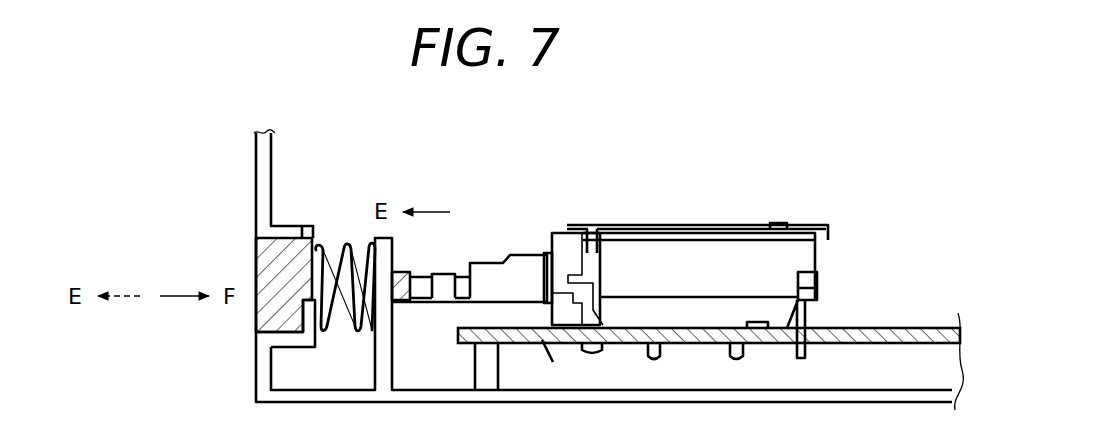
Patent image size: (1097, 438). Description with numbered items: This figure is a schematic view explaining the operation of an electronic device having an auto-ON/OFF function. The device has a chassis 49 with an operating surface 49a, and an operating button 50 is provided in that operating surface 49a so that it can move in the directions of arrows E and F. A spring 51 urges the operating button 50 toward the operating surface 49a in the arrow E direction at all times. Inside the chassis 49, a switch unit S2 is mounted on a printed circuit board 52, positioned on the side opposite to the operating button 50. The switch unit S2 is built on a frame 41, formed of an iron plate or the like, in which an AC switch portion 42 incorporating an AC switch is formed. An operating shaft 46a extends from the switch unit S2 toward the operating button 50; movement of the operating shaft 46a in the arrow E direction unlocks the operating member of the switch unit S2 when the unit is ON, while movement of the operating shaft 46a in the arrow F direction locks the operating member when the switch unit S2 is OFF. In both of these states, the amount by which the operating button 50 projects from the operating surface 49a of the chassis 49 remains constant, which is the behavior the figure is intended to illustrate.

The frame 41 is at (622, 218).
The AC switch portion 42 is at (742, 226).
The operating shaft 46a is at (448, 268).
The chassis 49 is at (246, 170).
The operating surface 49a is at (256, 213).
The operating button 50 is at (256, 318).
The spring 51 is at (338, 243).
The printed circuit board 52 is at (886, 327).
The switch unit S2 is at (698, 188).